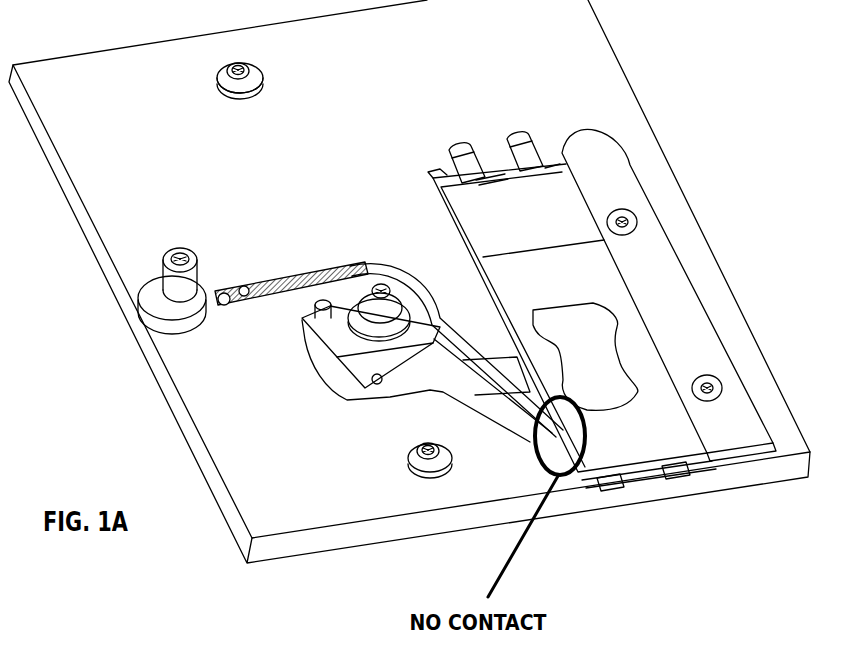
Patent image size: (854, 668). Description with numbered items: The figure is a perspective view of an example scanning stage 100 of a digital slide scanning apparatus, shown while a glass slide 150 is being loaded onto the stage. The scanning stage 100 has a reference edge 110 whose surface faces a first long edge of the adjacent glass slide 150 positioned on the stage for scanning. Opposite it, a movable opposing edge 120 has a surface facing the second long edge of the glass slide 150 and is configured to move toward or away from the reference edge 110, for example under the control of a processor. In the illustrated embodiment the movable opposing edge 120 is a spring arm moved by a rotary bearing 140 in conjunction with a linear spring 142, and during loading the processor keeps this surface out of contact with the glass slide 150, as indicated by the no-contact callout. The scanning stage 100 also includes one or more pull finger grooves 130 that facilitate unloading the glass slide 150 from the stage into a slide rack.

The scanning stage 100 is at (647, 63).
The reference edge 110 is at (643, 257).
The movable opposing edge 120 is at (487, 375).
The pull finger grooves 130 is at (515, 138).
The rotary bearing 140 is at (345, 328).
The linear spring 142 is at (290, 281).
The glass slide 150 is at (643, 445).